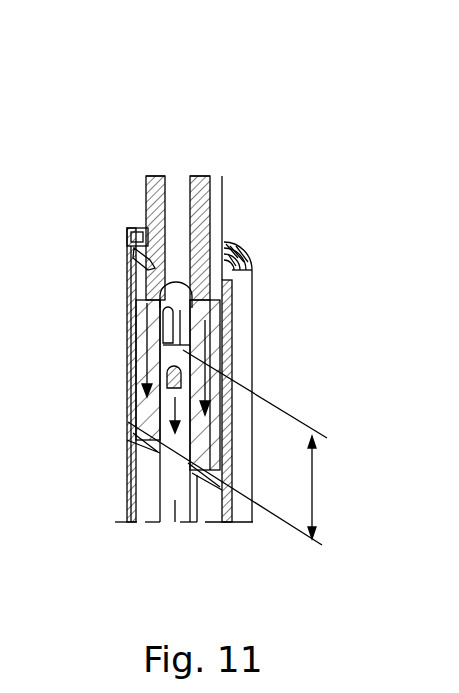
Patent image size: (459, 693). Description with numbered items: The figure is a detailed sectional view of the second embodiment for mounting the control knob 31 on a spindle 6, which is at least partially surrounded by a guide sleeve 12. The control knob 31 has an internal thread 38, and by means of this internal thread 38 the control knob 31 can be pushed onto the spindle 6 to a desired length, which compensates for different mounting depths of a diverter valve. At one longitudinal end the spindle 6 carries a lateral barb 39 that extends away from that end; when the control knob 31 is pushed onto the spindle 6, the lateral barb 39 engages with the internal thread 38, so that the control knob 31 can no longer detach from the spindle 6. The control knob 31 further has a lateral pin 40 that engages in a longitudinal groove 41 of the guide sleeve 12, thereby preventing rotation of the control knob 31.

The spindle 6 is at (178, 513).
The guide sleeve 12 is at (243, 365).
The control knob 31 is at (150, 198).
The internal thread 38 is at (180, 224).
The lateral barb 39 is at (127, 343).
The lateral pin 40 is at (138, 243).
The longitudinal groove 41 is at (130, 318).